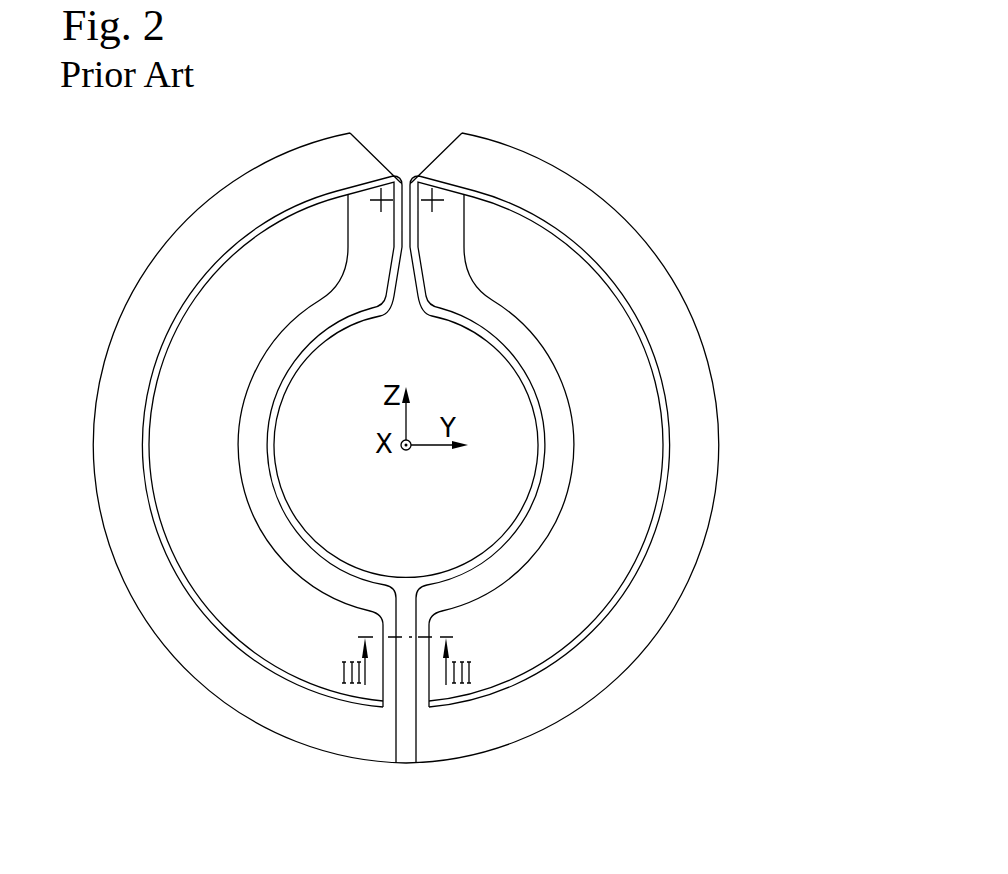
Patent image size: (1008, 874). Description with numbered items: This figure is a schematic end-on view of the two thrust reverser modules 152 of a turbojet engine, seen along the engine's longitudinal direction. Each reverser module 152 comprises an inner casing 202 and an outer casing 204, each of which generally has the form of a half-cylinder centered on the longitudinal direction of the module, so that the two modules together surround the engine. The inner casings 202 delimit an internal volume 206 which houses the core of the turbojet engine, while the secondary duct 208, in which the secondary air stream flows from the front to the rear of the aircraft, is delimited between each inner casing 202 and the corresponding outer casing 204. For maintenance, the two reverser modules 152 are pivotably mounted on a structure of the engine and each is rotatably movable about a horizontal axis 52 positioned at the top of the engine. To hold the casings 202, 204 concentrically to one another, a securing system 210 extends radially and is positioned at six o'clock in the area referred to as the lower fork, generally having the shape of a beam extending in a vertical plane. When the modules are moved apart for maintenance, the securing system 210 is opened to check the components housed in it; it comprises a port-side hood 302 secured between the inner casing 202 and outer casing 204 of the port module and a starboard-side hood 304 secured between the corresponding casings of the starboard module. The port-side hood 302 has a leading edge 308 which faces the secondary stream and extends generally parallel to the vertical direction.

The thrust reverser module 152 is at (620, 158).
The horizontal axis 52 is at (372, 194).
The inner casing 202 is at (553, 415).
The internal volume 206 is at (427, 527).
The secondary duct 208 is at (207, 486).
The outer casing 204 is at (607, 662).
The securing system 210 is at (175, 699).
The port-side hood 302 is at (390, 672).
The starboard-side hood 304 is at (425, 677).
The leading edge 308 is at (410, 730).